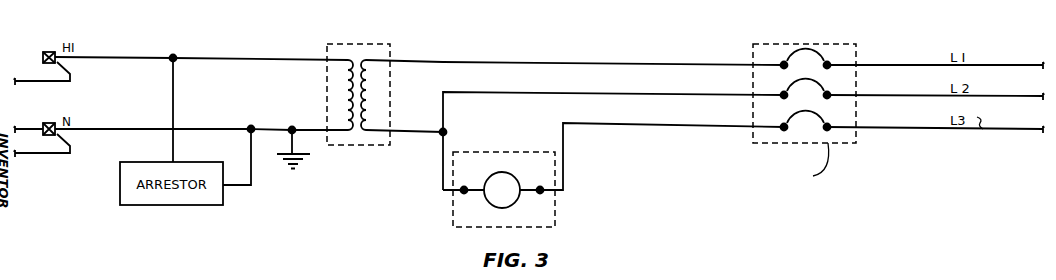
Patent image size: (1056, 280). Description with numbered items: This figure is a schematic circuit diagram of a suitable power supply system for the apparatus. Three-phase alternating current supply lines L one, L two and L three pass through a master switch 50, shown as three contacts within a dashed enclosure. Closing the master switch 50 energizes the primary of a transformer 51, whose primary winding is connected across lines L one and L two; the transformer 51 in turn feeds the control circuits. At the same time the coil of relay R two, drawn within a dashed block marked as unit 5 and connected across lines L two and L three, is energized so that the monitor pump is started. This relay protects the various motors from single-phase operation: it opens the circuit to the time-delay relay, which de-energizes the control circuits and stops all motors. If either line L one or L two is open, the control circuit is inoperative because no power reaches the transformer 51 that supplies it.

The resistor unit R2 5 is at (612, 159).
The master switch 50 is at (753, 50).
The transformer 51 is at (362, 146).